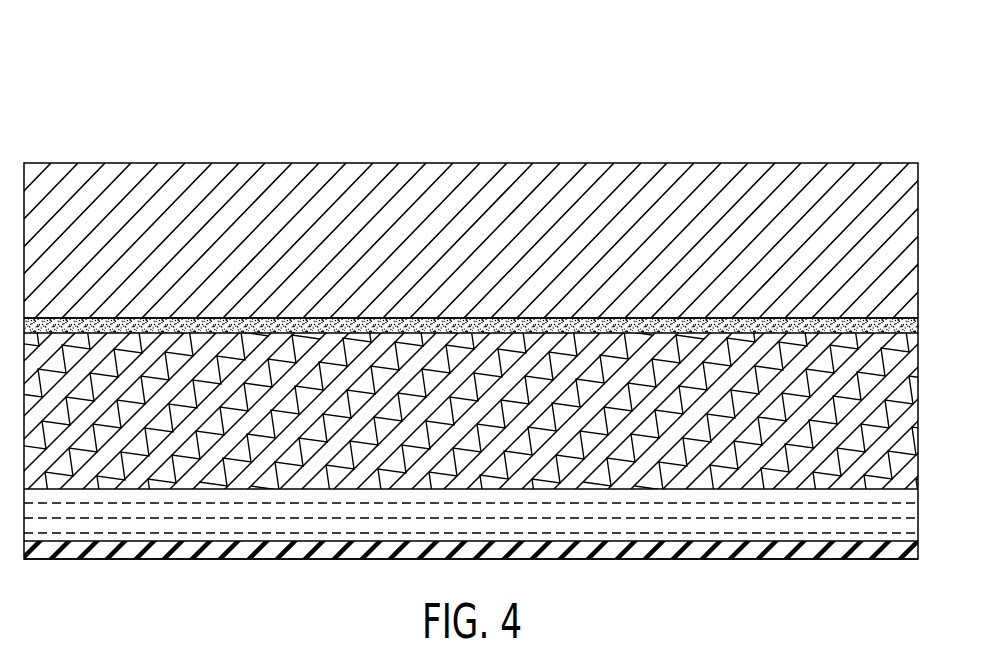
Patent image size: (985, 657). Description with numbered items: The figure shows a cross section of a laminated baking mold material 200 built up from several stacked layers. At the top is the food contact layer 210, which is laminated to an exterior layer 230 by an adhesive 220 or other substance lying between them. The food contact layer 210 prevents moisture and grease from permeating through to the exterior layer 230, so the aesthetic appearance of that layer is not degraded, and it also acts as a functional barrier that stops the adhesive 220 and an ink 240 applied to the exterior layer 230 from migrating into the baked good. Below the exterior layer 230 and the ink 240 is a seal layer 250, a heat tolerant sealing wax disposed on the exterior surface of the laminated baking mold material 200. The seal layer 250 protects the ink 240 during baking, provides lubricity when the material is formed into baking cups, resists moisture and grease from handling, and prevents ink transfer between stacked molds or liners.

The laminated baking mold material 200 is at (712, 73).
The food contact layer 210 is at (912, 231).
The adhesive 220 is at (915, 323).
The exterior layer 230 is at (912, 407).
The ink 240 is at (912, 512).
The seal layer 250 is at (912, 552).